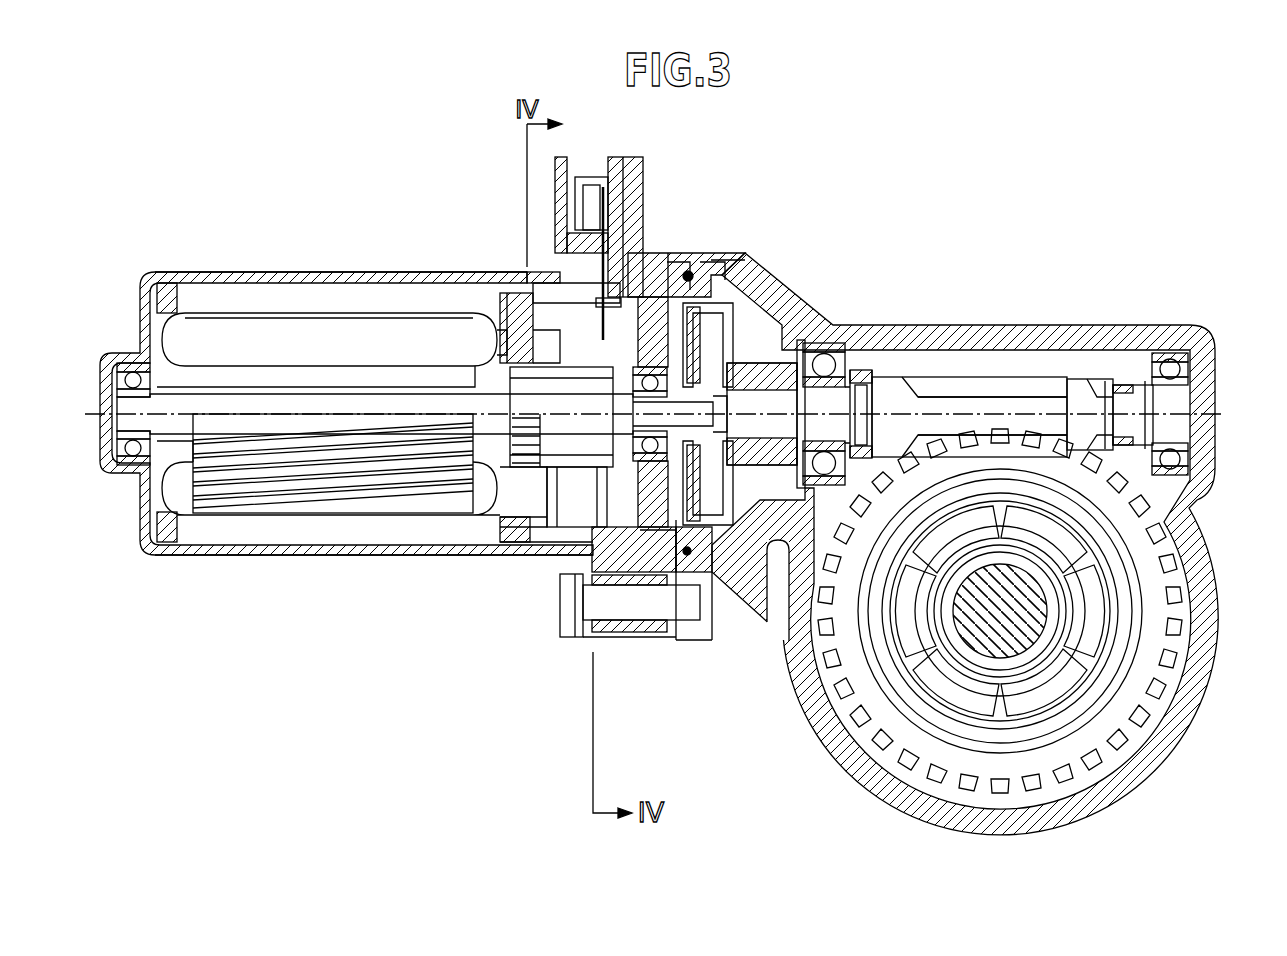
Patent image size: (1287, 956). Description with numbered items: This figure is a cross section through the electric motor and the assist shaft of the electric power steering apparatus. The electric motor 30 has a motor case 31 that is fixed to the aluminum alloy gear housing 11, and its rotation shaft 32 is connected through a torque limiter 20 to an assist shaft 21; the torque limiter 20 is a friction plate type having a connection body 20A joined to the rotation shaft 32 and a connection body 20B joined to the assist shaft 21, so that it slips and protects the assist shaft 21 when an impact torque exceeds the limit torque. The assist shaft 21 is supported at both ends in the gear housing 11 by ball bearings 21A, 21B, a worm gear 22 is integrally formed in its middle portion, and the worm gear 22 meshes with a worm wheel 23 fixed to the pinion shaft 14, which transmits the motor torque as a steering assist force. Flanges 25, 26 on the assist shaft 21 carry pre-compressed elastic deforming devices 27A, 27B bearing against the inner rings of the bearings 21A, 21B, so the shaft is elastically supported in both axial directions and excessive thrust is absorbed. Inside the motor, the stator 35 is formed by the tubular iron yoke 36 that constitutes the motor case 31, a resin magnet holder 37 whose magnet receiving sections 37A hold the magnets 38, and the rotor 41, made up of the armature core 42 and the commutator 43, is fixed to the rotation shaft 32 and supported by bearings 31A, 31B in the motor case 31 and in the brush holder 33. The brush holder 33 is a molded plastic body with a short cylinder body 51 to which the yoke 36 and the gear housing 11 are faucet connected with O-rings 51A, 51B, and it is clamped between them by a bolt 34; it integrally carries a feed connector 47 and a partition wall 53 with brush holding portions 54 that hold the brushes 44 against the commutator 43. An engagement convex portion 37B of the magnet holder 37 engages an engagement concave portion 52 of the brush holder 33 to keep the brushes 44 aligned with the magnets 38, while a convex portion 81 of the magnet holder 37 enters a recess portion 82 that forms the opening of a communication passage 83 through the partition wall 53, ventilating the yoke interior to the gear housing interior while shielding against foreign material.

The gear housing 11 is at (760, 268).
The pinion shaft 14 is at (989, 633).
The torque limiter 20 is at (743, 352).
The connection body 20A is at (676, 648).
The connection body 20B is at (756, 472).
The assist shaft 21 is at (917, 377).
The bearing 21A is at (822, 476).
The bearing 21B is at (1175, 462).
The worm gear 22 is at (1045, 377).
The worm wheel 23 is at (868, 730).
The flange 25 is at (862, 372).
The flange 26 is at (1128, 385).
The elastic deforming device 27A is at (850, 343).
The elastic deforming device 27B is at (1160, 353).
The electric motor 30 is at (347, 255).
The motor case 31 is at (274, 552).
The bearing 31A is at (132, 370).
The bearing 31B is at (638, 466).
The rotation shaft 32 is at (284, 370).
The brush holder 33 is at (648, 242).
The bolt 34 is at (565, 622).
The stator 35 is at (374, 286).
The yoke 36 is at (328, 548).
The magnet holder 37 is at (505, 300).
The magnet receiving section 37A is at (468, 320).
The engagement convex portion 37B is at (527, 288).
The magnet 38 is at (418, 296).
The rotor 41 is at (233, 497).
The armature core 42 is at (218, 315).
The commutator 43 is at (567, 440).
The brush 44 is at (567, 492).
The feed connector 47 is at (641, 162).
The short cylinder body 51 is at (697, 258).
The O-ring 51A is at (580, 215).
The O-ring 51B is at (715, 272).
The engagement concave portion 52 is at (497, 333).
The partition wall 53 is at (743, 303).
The brush holding portion 54 is at (513, 493).
The convex portion 81 is at (612, 215).
The recess portion 82 is at (597, 308).
The communication passage 83 is at (690, 270).